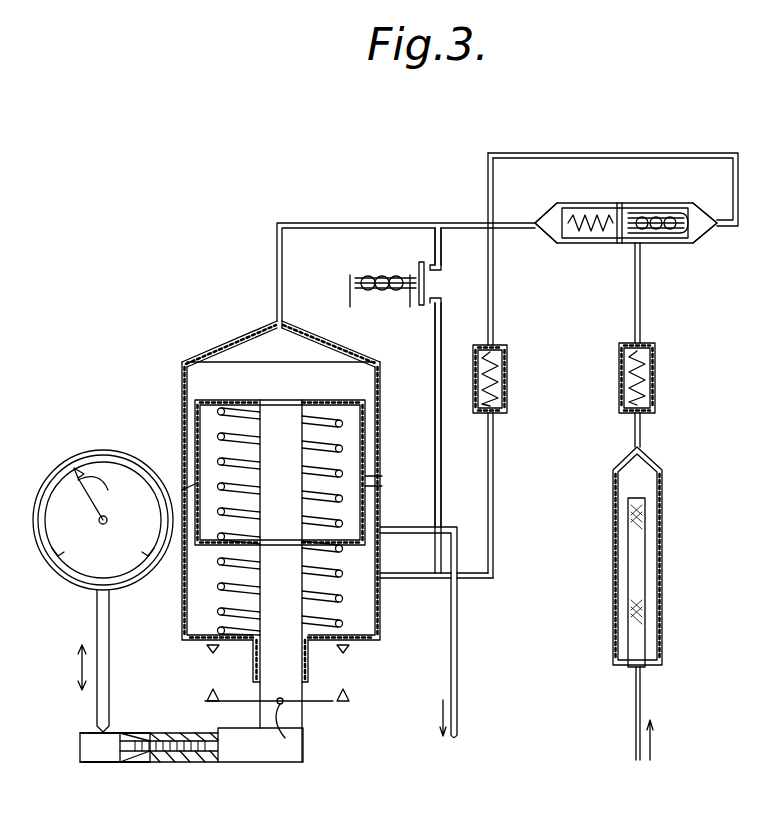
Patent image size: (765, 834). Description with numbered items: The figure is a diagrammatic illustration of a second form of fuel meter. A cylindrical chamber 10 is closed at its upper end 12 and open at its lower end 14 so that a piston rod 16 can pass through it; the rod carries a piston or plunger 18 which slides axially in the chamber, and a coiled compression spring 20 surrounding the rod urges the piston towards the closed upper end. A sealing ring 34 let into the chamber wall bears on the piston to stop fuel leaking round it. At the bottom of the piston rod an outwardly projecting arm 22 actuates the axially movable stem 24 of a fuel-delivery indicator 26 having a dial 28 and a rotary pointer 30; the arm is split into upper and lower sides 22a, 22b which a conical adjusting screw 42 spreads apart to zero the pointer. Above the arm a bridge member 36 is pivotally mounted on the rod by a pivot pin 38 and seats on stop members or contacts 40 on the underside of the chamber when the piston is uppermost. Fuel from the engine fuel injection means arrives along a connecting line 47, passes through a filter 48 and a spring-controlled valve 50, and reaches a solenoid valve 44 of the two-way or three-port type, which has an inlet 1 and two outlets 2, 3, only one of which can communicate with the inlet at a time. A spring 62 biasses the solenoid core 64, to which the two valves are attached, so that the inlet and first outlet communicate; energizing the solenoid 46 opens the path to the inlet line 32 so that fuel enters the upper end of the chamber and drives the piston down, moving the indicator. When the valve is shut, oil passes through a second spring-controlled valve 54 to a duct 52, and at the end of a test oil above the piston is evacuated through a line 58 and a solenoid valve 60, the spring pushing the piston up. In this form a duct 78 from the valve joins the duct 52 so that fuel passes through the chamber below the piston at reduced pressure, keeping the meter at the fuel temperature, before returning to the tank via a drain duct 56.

The inlet 1 is at (641, 247).
The outlet 2 is at (712, 224).
The outlet 3 is at (540, 220).
The cylindrical chamber 10 is at (174, 386).
The closed upper end 12 is at (226, 346).
The open lower end 14 is at (310, 665).
The piston rod 16 is at (290, 462).
The piston or plunger 18 is at (367, 410).
The coiled compression spring 20 is at (340, 520).
The outwardly projecting arm 22 is at (234, 764).
The upper side of arm 22a is at (92, 730).
The lower side of arm 22b is at (102, 765).
The stem 24 is at (110, 657).
The fuel-delivery indicator 26 is at (81, 596).
The dial 28 is at (52, 492).
The rotary pointer 30 is at (108, 480).
The inlet line 32 is at (360, 222).
The sealing ring 34 is at (375, 480).
The bridge member 36 is at (343, 701).
The pivot pin 38 is at (285, 738).
The stop members or contacts 40 is at (207, 661).
The conical adjusting screw 42 is at (78, 745).
The solenoid valve 44 is at (614, 196).
The solenoid 46 is at (643, 214).
The connecting line 47 is at (641, 699).
The filter 48 is at (645, 562).
The spring-controlled valve 50 is at (656, 383).
The duct 52 is at (466, 583).
The second spring-controlled valve 54 is at (508, 383).
The drain duct 56 is at (458, 556).
The line 58 is at (432, 240).
The solenoid valve 60 is at (417, 313).
The spring 62 is at (590, 235).
The solenoid core 64 is at (680, 228).
The duct 78 is at (441, 458).